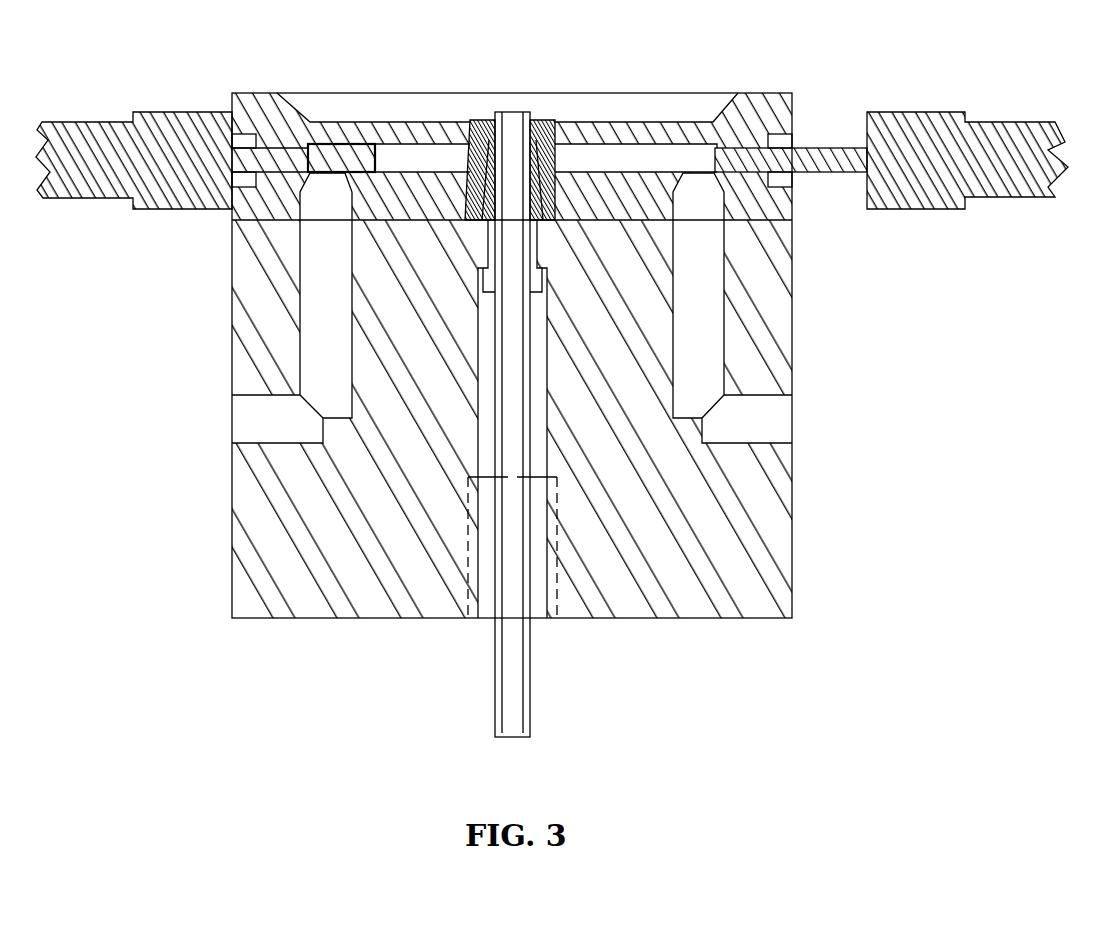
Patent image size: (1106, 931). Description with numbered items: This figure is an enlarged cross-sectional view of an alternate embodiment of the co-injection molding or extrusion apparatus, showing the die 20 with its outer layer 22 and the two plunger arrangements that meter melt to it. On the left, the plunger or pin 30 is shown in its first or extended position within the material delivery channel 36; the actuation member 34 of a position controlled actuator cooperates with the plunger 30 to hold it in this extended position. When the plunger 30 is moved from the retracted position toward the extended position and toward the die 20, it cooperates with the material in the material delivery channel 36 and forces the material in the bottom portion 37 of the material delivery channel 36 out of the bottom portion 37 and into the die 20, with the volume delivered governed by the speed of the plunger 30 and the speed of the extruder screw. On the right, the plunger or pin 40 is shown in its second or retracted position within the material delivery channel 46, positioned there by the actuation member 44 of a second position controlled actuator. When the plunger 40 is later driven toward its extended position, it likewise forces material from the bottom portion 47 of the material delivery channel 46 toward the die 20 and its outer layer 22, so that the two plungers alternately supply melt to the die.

The die 20 is at (527, 108).
The outer layer 22 is at (257, 518).
The plunger 30 is at (282, 152).
The actuation member 34 is at (180, 198).
The material delivery channel 36 is at (320, 332).
The bottom portion 37 is at (425, 157).
The plunger 40 is at (802, 157).
The actuation member 44 is at (933, 193).
The material delivery channel 46 is at (705, 348).
The bottom portion 47 is at (677, 150).